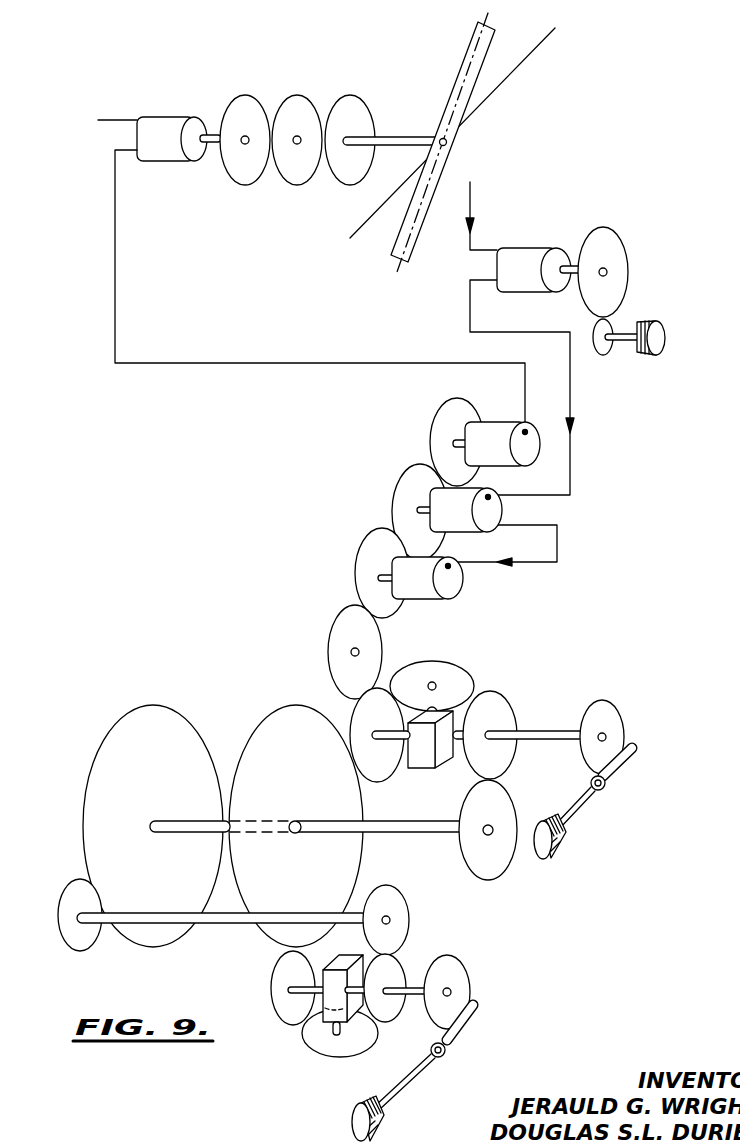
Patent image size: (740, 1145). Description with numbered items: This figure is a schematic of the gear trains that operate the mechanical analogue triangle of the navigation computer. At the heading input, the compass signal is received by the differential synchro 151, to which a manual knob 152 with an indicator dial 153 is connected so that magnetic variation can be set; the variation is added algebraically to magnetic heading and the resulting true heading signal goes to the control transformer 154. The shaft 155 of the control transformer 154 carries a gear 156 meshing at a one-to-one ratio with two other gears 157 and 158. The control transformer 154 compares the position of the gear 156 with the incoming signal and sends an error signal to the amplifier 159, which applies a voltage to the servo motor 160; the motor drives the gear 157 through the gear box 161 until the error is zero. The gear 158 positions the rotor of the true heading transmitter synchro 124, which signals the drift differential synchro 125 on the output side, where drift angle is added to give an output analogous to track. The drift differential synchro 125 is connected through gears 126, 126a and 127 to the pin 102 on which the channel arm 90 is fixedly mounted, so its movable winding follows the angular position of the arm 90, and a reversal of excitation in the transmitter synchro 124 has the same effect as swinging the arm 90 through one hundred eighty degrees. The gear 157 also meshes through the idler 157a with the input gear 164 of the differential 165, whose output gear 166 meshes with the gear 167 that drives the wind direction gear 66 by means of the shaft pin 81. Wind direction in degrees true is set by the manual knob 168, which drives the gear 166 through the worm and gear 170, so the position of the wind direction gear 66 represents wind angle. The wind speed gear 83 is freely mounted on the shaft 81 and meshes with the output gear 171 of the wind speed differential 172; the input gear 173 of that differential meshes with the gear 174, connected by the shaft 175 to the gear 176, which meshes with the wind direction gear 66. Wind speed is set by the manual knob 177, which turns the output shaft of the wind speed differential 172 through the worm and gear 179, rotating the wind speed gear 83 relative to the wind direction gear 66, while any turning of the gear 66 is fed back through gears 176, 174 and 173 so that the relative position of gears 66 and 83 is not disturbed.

The wind direction gear 66 is at (147, 710).
The shaft pin 81 is at (396, 822).
The wind speed gear 83 is at (267, 726).
The channel arm 90 is at (496, 47).
The pin 102 is at (395, 137).
The true heading transmitter synchro 124 is at (498, 423).
The drift differential synchro 125 is at (170, 120).
The gear 126 is at (244, 104).
The gear 126a is at (303, 100).
The gear 127 is at (355, 108).
The differential synchro 151 is at (528, 250).
The manual knob 152 is at (654, 352).
The indicator dial 153 is at (627, 274).
The control transformer 154 is at (500, 512).
The shaft 155 is at (402, 509).
The gear 156 is at (410, 475).
The gear 157 is at (352, 560).
The idler 157a is at (338, 622).
The gear 158 is at (443, 412).
The amplifier 159 is at (518, 580).
The servo motor 160 is at (420, 578).
The gear box 161 is at (458, 582).
The input gear 164 is at (381, 772).
The differential 165 is at (473, 663).
The output gear 166 is at (504, 710).
The gear 167 is at (498, 806).
The manual knob 168 is at (565, 845).
The worm and gear 170 is at (620, 770).
The output gear 171 is at (272, 997).
The wind speed differential 172 is at (294, 1046).
The input gear 173 is at (410, 968).
The gear 174 is at (410, 906).
The shaft 175 is at (230, 922).
The gear 176 is at (90, 945).
The manual knob 177 is at (384, 1116).
The worm and gear 179 is at (466, 982).